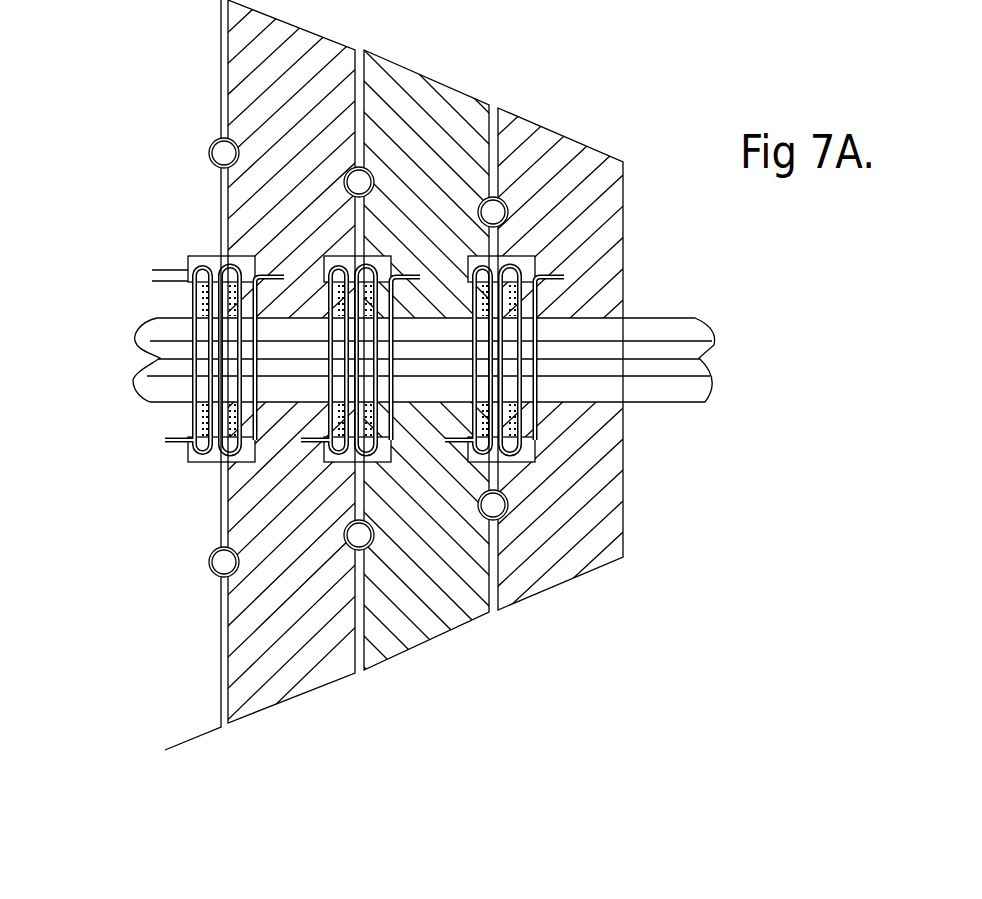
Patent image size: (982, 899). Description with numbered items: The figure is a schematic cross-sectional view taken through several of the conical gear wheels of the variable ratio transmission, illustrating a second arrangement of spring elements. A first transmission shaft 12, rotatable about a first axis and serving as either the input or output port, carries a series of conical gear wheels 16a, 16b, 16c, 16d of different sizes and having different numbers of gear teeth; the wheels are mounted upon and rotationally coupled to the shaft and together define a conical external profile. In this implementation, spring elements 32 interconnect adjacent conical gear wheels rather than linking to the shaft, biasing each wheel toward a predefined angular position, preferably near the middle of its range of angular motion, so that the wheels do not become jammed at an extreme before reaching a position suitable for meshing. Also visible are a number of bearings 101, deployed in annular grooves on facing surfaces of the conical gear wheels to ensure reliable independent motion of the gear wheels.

The first transmission shaft 12 is at (684, 357).
The conical gear wheel 16a is at (169, 658).
The conical gear wheel 16b is at (287, 612).
The conical gear wheel 16c is at (418, 574).
The conical gear wheel 16d is at (556, 539).
The spring element 32 is at (204, 268).
The bearing 101 is at (497, 504).